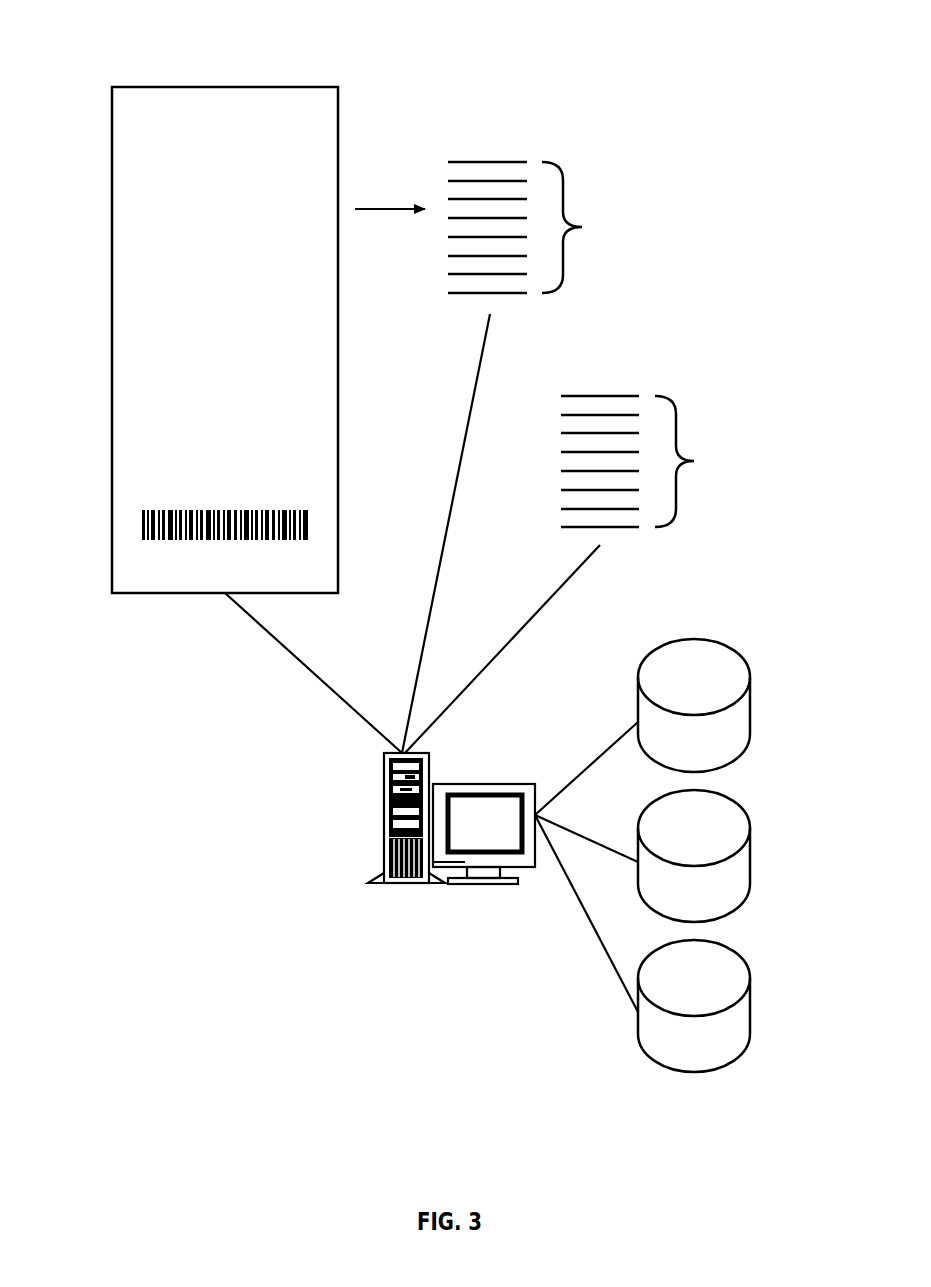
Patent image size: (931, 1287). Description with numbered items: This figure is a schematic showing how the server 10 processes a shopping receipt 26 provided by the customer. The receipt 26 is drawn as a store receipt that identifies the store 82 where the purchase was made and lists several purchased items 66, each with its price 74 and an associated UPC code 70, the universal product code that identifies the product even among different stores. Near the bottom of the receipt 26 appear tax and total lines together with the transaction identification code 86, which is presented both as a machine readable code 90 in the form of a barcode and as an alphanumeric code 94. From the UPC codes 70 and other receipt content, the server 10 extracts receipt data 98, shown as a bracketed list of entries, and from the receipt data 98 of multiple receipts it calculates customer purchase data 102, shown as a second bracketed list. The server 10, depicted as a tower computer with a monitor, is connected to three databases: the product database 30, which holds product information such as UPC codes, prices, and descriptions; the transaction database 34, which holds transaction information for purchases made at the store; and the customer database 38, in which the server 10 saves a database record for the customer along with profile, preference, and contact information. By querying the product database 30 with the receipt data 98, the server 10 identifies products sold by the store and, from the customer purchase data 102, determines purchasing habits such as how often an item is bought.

The server 10 is at (531, 754).
The receipt 26 is at (199, 62).
The product database 30 is at (755, 632).
The transaction database 34 is at (755, 780).
The customer database 38 is at (755, 932).
The item 66 is at (128, 176).
The UPC code 70 is at (331, 189).
The price 74 is at (331, 151).
The store 82 is at (160, 94).
The transaction identification code 86 is at (327, 511).
The machine readable code 90 is at (128, 514).
The alphanumeric code 94 is at (148, 553).
The receipt data 98 is at (592, 218).
The customer purchase data 102 is at (705, 455).